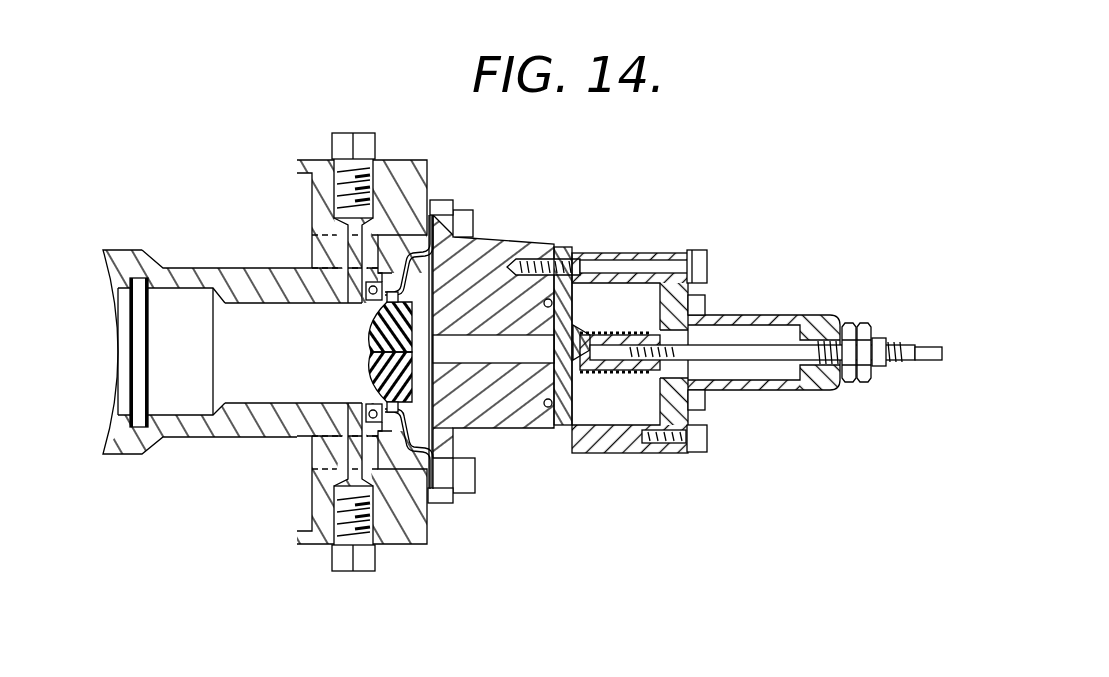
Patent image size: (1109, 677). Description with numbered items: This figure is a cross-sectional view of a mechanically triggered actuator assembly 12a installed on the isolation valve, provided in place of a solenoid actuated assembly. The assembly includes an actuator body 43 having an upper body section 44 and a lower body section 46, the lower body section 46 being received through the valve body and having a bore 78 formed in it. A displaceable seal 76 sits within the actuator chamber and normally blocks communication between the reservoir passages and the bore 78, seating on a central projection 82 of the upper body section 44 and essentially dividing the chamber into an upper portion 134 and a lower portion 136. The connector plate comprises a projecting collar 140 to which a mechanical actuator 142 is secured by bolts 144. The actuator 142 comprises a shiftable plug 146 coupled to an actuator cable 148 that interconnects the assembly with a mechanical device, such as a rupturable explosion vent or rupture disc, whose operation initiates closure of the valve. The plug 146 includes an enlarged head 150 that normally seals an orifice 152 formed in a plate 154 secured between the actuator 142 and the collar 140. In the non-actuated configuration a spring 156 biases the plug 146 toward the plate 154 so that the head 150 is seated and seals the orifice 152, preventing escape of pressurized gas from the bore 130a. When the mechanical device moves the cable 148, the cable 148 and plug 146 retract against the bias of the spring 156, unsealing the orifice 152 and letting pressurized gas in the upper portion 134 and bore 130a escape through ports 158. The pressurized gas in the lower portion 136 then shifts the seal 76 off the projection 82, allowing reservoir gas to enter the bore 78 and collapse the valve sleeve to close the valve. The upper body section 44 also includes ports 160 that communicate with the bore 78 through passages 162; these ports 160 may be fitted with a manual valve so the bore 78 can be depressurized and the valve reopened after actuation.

The mechanically triggered actuator assembly 12a is at (693, 183).
The actuator body 43 is at (405, 547).
The upper body section 44 is at (407, 170).
The lower body section 46 is at (187, 274).
The displaceable seal 76 is at (374, 338).
The bore 78 is at (293, 353).
The central projection 82 is at (376, 400).
The bore 130a is at (503, 360).
The upper portion 134 is at (415, 430).
The lower portion 136 is at (400, 458).
The projecting collar 140 is at (507, 248).
The mechanical actuator 142 is at (577, 442).
The bolts 144 is at (703, 267).
The shiftable plug 146 is at (580, 374).
The actuator cable 148 is at (783, 353).
The enlarged head 150 is at (577, 340).
The orifice 152 is at (560, 350).
The plate 154 is at (558, 247).
The spring 156 is at (630, 376).
The ports 158 is at (670, 410).
The ports 160 is at (346, 497).
The passages 162 is at (348, 247).